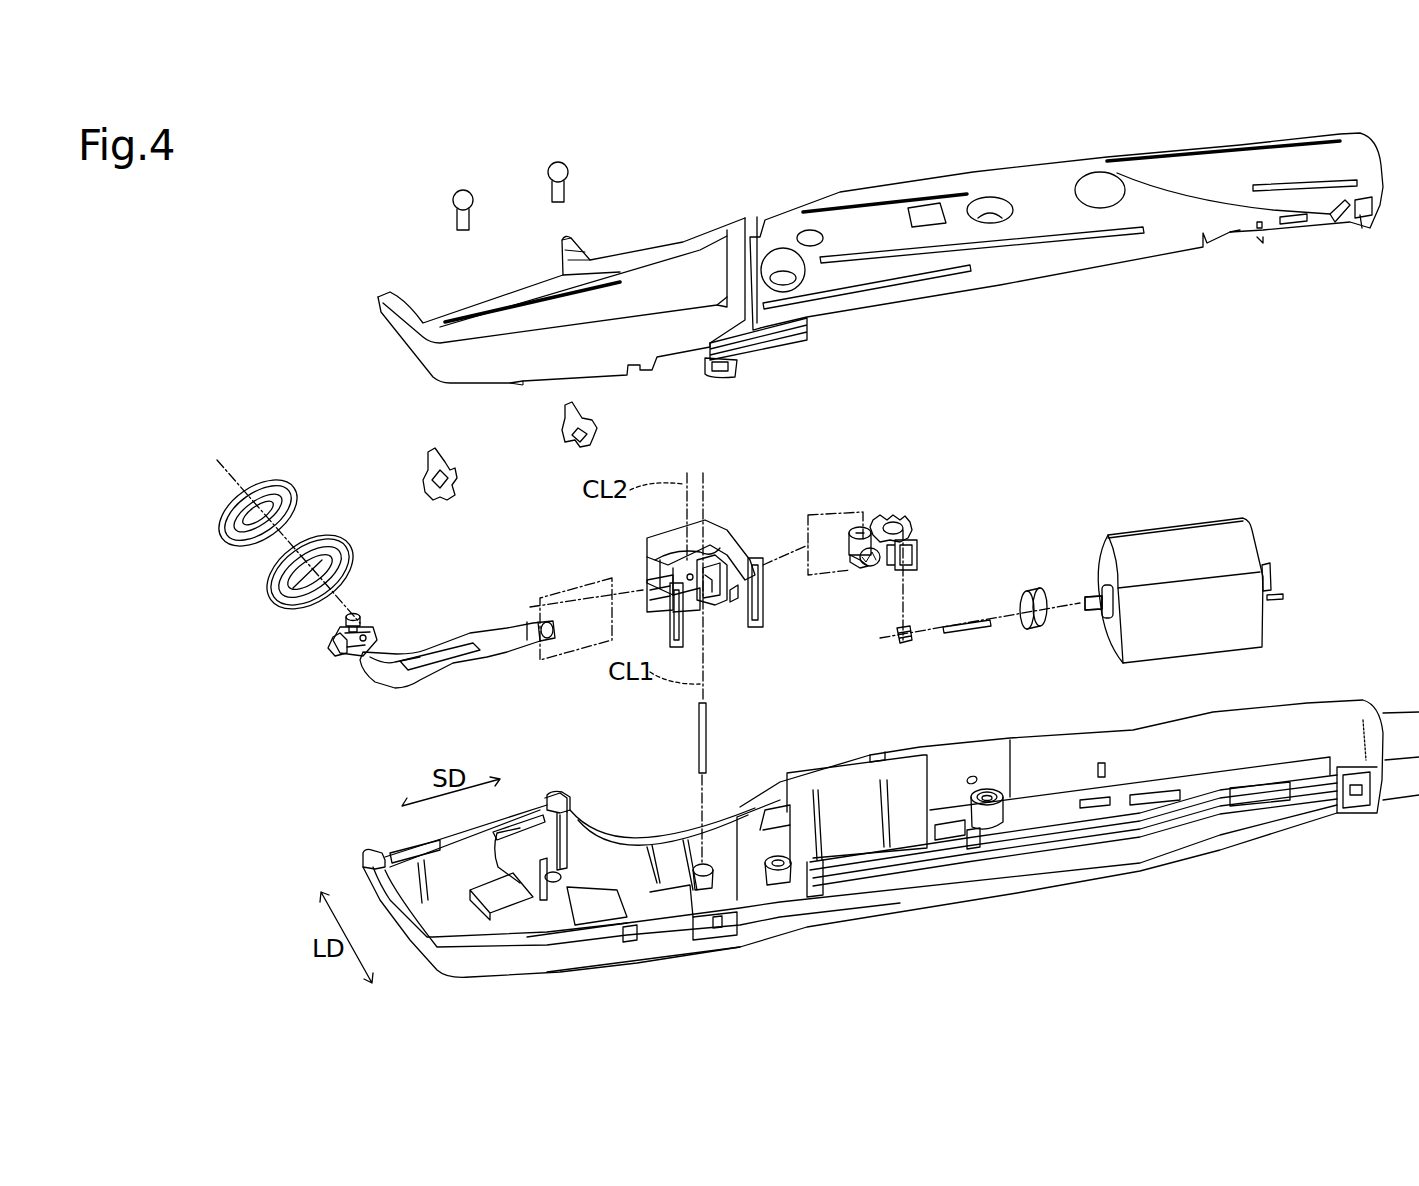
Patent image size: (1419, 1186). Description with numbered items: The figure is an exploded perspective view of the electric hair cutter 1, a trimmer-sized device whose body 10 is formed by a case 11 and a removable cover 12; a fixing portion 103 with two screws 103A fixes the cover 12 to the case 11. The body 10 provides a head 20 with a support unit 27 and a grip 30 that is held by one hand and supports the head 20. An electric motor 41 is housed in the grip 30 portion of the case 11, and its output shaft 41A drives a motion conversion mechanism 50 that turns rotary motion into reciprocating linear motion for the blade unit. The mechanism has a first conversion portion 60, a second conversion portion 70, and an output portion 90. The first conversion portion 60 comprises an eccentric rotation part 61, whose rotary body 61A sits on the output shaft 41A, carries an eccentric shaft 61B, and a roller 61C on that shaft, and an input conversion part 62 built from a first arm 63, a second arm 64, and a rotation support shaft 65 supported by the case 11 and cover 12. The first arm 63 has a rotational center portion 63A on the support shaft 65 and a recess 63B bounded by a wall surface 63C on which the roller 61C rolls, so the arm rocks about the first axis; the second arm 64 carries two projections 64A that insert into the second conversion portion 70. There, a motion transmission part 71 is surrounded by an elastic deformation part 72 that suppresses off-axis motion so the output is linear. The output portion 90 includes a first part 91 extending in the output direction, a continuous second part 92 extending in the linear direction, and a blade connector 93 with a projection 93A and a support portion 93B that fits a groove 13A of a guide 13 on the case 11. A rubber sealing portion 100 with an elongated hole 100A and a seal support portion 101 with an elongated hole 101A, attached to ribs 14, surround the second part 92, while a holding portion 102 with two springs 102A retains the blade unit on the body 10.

The electric hair cutter 1 is at (197, 236).
The body 10 is at (891, 555).
The case 11 is at (1017, 893).
The cover 12 is at (853, 192).
The guide 13 is at (558, 801).
The groove 13A is at (497, 845).
The ribs 14 is at (560, 870).
The head 20 is at (315, 820).
The support unit 27 is at (640, 967).
The grip 30 is at (1240, 933).
The electric motor 41 is at (1213, 523).
The output shaft 41A is at (1087, 593).
The motion conversion mechanism 50 is at (985, 355).
The first conversion portion 60 is at (1037, 439).
The eccentric rotation part 61 is at (1065, 690).
The rotary body 61A is at (1040, 635).
The eccentric shaft 61B is at (967, 635).
The roller 61C is at (905, 645).
The input conversion part 62 is at (970, 530).
The first arm 63 is at (977, 462).
The rotational center portion 63A is at (863, 522).
The recess 63B is at (890, 517).
The wall surface 63C is at (917, 522).
The second arm 64 is at (883, 570).
The projections 64A is at (863, 550).
The rotation support shaft 65 is at (697, 730).
The second conversion portion 70 is at (733, 498).
The motion transmission part 71 is at (707, 605).
The elastic deformation part 72 is at (680, 525).
The output portion 90 is at (455, 609).
The first part 91 is at (453, 678).
The second part 92 is at (367, 678).
The blade connector 93 is at (242, 650).
The projection 93A is at (345, 633).
The support portion 93B is at (335, 665).
The sealing portion 100 is at (267, 482).
The elongated hole 100A is at (222, 538).
The seal support portion 101 is at (320, 542).
The elongated hole 101A is at (277, 604).
The holding portion 102 is at (558, 451).
The springs 102A is at (455, 464).
The fixing portion 103 is at (509, 186).
The screws 103A is at (456, 192).